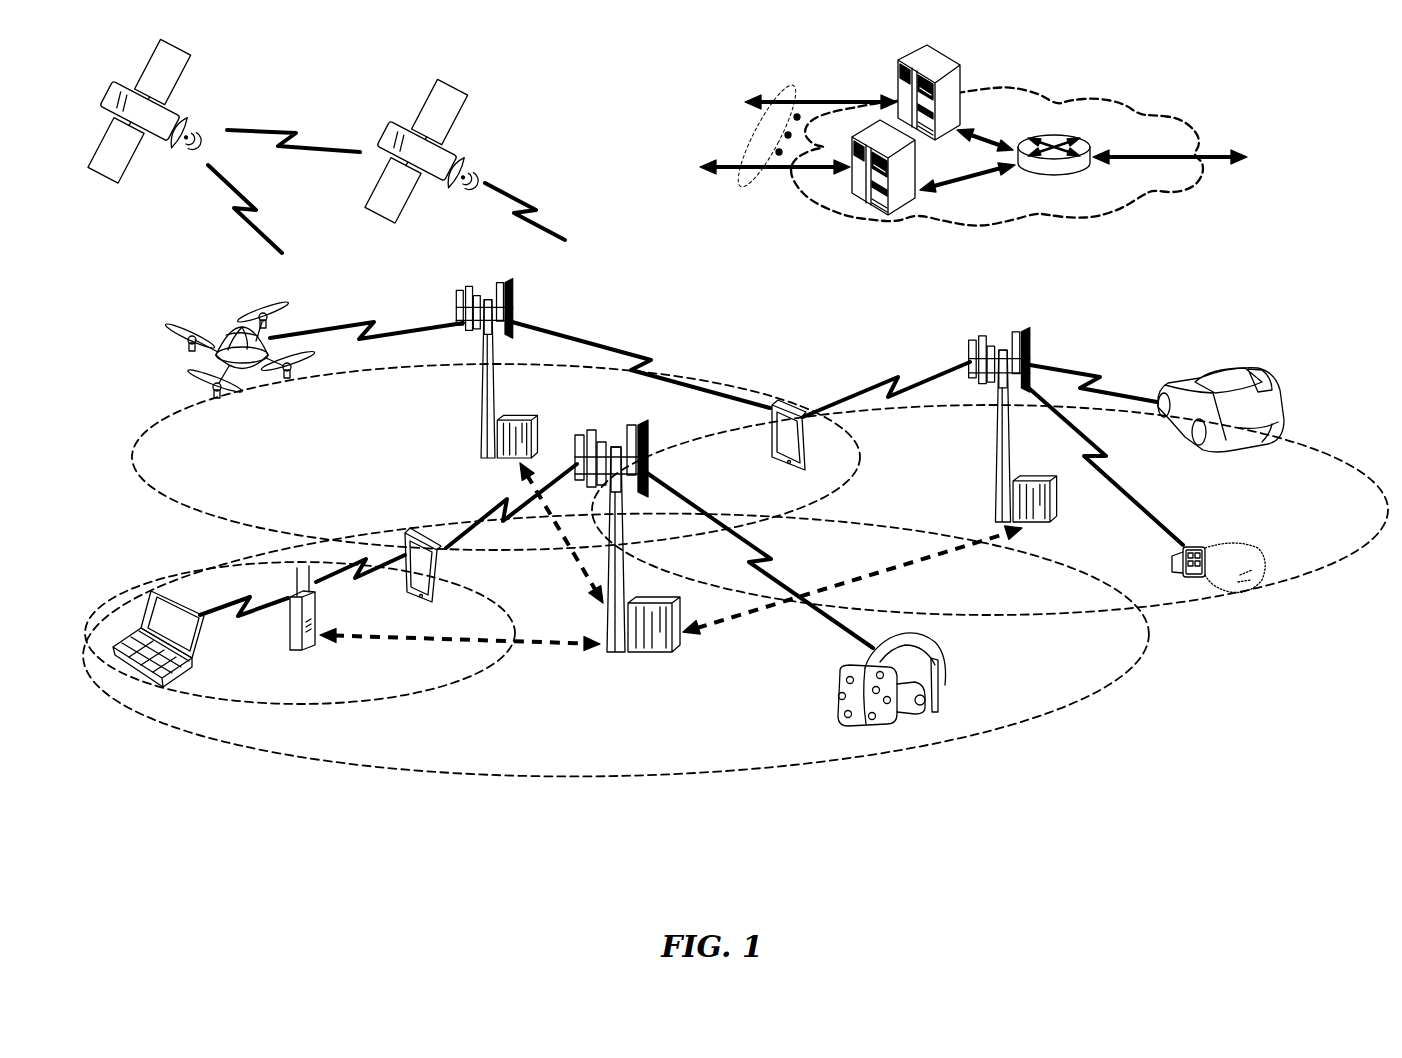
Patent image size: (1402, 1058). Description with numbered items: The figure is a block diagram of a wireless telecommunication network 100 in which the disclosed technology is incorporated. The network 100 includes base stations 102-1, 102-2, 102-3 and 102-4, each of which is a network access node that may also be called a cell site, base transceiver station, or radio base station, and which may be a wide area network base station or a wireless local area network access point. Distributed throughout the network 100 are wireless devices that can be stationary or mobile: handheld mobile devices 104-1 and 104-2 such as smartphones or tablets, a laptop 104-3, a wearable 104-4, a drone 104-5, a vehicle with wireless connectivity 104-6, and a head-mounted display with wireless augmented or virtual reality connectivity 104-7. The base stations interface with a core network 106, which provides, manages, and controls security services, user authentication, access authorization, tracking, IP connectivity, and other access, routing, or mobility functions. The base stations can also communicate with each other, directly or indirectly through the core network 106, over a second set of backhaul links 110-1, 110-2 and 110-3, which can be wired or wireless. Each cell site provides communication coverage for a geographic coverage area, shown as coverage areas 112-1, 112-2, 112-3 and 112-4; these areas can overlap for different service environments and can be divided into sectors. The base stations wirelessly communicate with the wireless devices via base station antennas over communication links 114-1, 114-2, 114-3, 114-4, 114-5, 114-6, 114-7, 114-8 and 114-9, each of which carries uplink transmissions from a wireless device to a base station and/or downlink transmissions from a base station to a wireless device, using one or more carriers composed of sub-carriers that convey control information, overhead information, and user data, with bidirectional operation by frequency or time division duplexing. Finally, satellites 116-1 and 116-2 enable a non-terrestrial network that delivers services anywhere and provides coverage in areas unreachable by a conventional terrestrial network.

The wireless telecommunication network 100 is at (1284, 112).
The base station 102-1 is at (617, 656).
The base station 102-2 is at (481, 408).
The base station 102-3 is at (997, 448).
The base station 102-4 is at (292, 640).
The handheld mobile device 104-1 is at (483, 579).
The handheld mobile device 104-2 is at (770, 445).
The laptop 104-3 is at (138, 672).
The wearable 104-4 is at (1198, 548).
The drone 104-5 is at (250, 372).
The vehicle with wireless connectivity 104-6 is at (1238, 402).
The head-mounted display 104-7 is at (940, 666).
The core network 106 is at (1090, 222).
The backhaul link 110-1 is at (358, 637).
The backhaul link 110-2 is at (918, 563).
The backhaul link 110-3 is at (573, 560).
The geographic coverage area 112-1 is at (560, 778).
The geographic coverage area 112-2 is at (425, 693).
The geographic coverage area 112-3 is at (196, 516).
The geographic coverage area 112-4 is at (1292, 447).
The communication link 114-1 is at (775, 563).
The communication link 114-2 is at (507, 513).
The communication link 114-3 is at (215, 614).
The communication link 114-4 is at (360, 582).
The communication link 114-5 is at (372, 326).
The communication link 114-6 is at (640, 365).
The communication link 114-7 is at (893, 390).
The communication link 114-8 is at (1122, 478).
The communication link 114-9 is at (1092, 383).
The satellite 116-1 is at (196, 121).
The satellite 116-2 is at (473, 160).